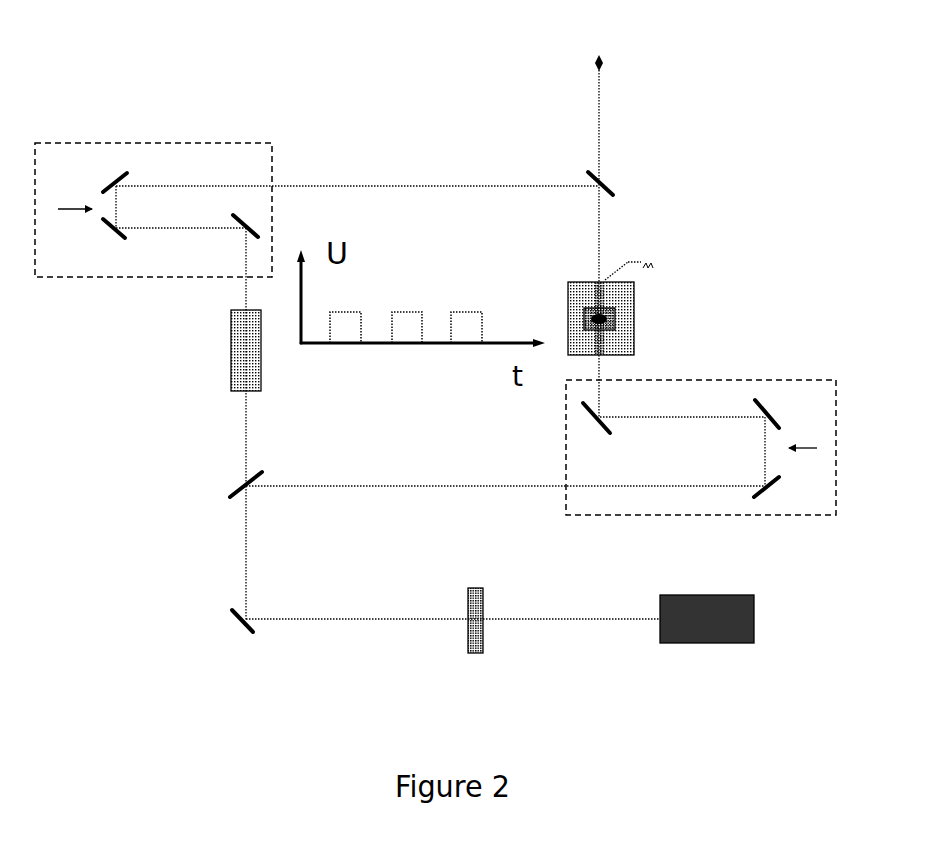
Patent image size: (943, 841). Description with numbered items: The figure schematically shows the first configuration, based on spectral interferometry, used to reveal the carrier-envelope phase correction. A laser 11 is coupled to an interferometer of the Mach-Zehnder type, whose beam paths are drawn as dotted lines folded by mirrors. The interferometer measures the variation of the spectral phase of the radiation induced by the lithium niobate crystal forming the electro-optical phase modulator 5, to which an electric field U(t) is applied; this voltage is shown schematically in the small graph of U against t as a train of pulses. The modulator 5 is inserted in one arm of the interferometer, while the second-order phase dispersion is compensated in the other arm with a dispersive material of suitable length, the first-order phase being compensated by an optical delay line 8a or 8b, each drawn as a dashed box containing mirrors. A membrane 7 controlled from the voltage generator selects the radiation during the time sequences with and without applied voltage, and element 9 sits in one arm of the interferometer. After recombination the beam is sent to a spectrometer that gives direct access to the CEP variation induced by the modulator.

The electro-optical phase modulator 5 is at (635, 327).
The membrane 7 is at (468, 653).
The optical delay line 8a is at (677, 515).
The optical delay line 8b is at (190, 278).
The modulator 9 is at (232, 385).
The laser 11 is at (707, 642).